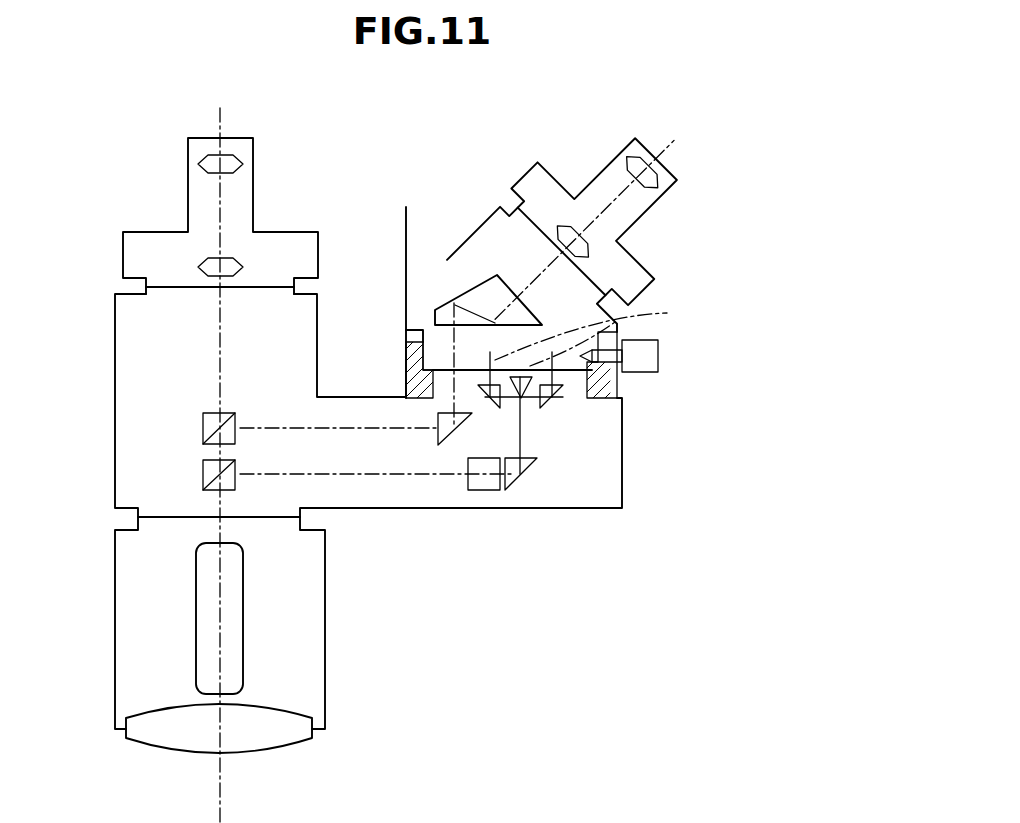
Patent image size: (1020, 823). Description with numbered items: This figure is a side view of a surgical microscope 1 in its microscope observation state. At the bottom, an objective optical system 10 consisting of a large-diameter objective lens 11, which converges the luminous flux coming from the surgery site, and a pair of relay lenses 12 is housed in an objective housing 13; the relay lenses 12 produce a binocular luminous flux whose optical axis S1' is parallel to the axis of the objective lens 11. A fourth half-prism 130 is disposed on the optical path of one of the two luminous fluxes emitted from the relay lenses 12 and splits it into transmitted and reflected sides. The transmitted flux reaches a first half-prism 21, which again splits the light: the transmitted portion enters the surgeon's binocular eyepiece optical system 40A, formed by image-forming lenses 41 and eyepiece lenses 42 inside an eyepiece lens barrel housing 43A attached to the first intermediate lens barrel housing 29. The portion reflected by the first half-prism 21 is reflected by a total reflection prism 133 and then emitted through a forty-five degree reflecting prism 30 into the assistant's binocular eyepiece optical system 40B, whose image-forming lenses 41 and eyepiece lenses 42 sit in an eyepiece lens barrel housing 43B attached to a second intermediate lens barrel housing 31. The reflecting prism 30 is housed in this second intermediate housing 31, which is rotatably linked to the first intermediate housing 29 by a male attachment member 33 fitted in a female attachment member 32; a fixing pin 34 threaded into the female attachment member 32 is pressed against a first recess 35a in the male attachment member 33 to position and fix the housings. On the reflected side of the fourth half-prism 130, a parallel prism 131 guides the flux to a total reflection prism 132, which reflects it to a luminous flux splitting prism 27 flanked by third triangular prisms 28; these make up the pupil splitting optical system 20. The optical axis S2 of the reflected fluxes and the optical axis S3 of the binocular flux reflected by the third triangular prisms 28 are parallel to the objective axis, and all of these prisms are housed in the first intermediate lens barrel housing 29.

The surgical microscope 1 is at (608, 650).
The objective optical system 10 is at (424, 657).
The objective lens 11 is at (290, 748).
The relay lenses 12 is at (237, 632).
The objective housing 13 is at (325, 600).
The pupil splitting optical system 20 is at (697, 403).
The first half-prism 21 is at (203, 422).
The luminous flux splitting prism 27 is at (617, 398).
The third triangular prisms 28 is at (498, 402).
The first intermediate lens barrel housing 29 is at (543, 510).
The 45° reflecting prism 30 is at (492, 283).
The second intermediate lens barrel housing 31 is at (407, 222).
The female attachment member 32 is at (405, 375).
The male attachment member 33 is at (430, 340).
The fixing pin 34 is at (658, 357).
The first recess 35a is at (617, 381).
The surgeon's binocular eyepiece optical system 40A is at (322, 100).
The assistant's binocular eyepiece optical system 40B is at (727, 182).
The image-forming lenses 41 is at (243, 267).
The eyepiece lenses 42 is at (243, 165).
The eyepiece lens barrel housing 43A is at (165, 232).
The eyepiece lens barrel housing 43B is at (558, 180).
The fourth half-prism 130 is at (203, 467).
The parallel prism 131 is at (485, 490).
The total reflection prism 132 is at (513, 486).
The total reflection prism 133 is at (453, 433).
The optical axis of the binocular luminous flux S1' is at (256, 811).
The optical axis of the reflected luminous fluxes S2 is at (433, 357).
The optical axis of the pupil-split binocular luminous flux S3 is at (604, 336).